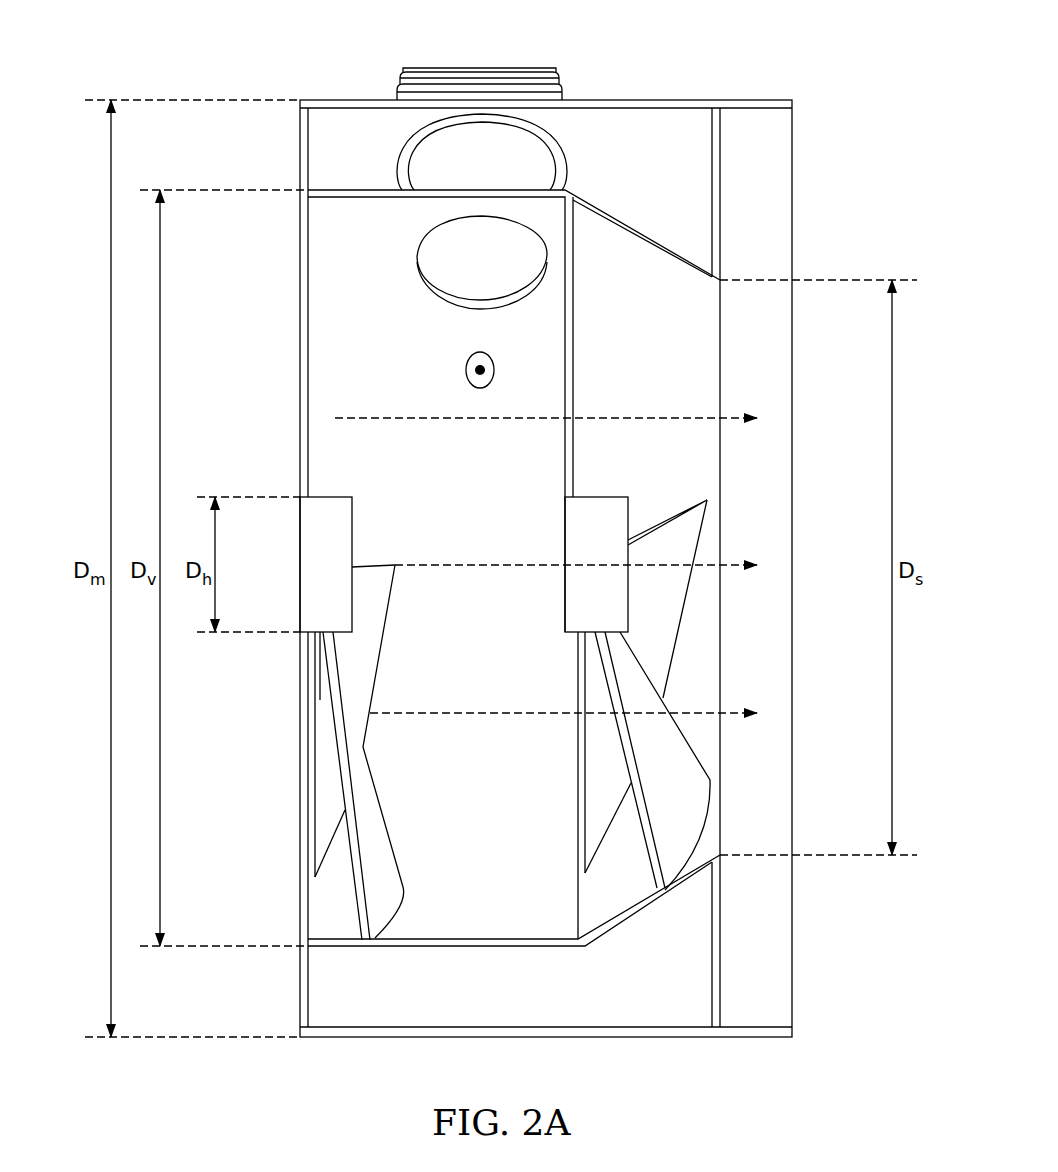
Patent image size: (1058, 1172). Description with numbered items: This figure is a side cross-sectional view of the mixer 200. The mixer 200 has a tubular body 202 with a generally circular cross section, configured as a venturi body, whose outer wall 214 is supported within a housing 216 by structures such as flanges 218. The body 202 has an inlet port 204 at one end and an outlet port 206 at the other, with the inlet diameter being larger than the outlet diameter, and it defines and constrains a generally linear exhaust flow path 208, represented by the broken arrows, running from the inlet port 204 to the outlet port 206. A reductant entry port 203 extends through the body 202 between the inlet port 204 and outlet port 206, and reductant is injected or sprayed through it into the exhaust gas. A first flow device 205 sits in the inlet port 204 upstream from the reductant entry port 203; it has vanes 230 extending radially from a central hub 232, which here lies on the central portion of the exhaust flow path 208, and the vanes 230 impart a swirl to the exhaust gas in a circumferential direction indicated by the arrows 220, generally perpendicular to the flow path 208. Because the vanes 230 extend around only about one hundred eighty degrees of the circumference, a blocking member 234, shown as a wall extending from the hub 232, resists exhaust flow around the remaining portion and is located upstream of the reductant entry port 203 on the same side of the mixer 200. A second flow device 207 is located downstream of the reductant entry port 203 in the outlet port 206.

The mixer 200 is at (828, 88).
The body 202 is at (602, 206).
The reductant entry port 203 is at (465, 262).
The inlet port 204 is at (280, 737).
The first flow device 205 is at (300, 660).
The outlet port 206 is at (762, 497).
The second flow device 207 is at (660, 587).
The exhaust flow path 208 is at (402, 421).
The outer wall 214 is at (660, 254).
The housing 216 is at (340, 100).
The flange 218 is at (712, 966).
The swirl direction arrows 220 is at (466, 370).
The vane 230 is at (316, 832).
The hub 232 is at (315, 553).
The blocking member 234 is at (300, 350).